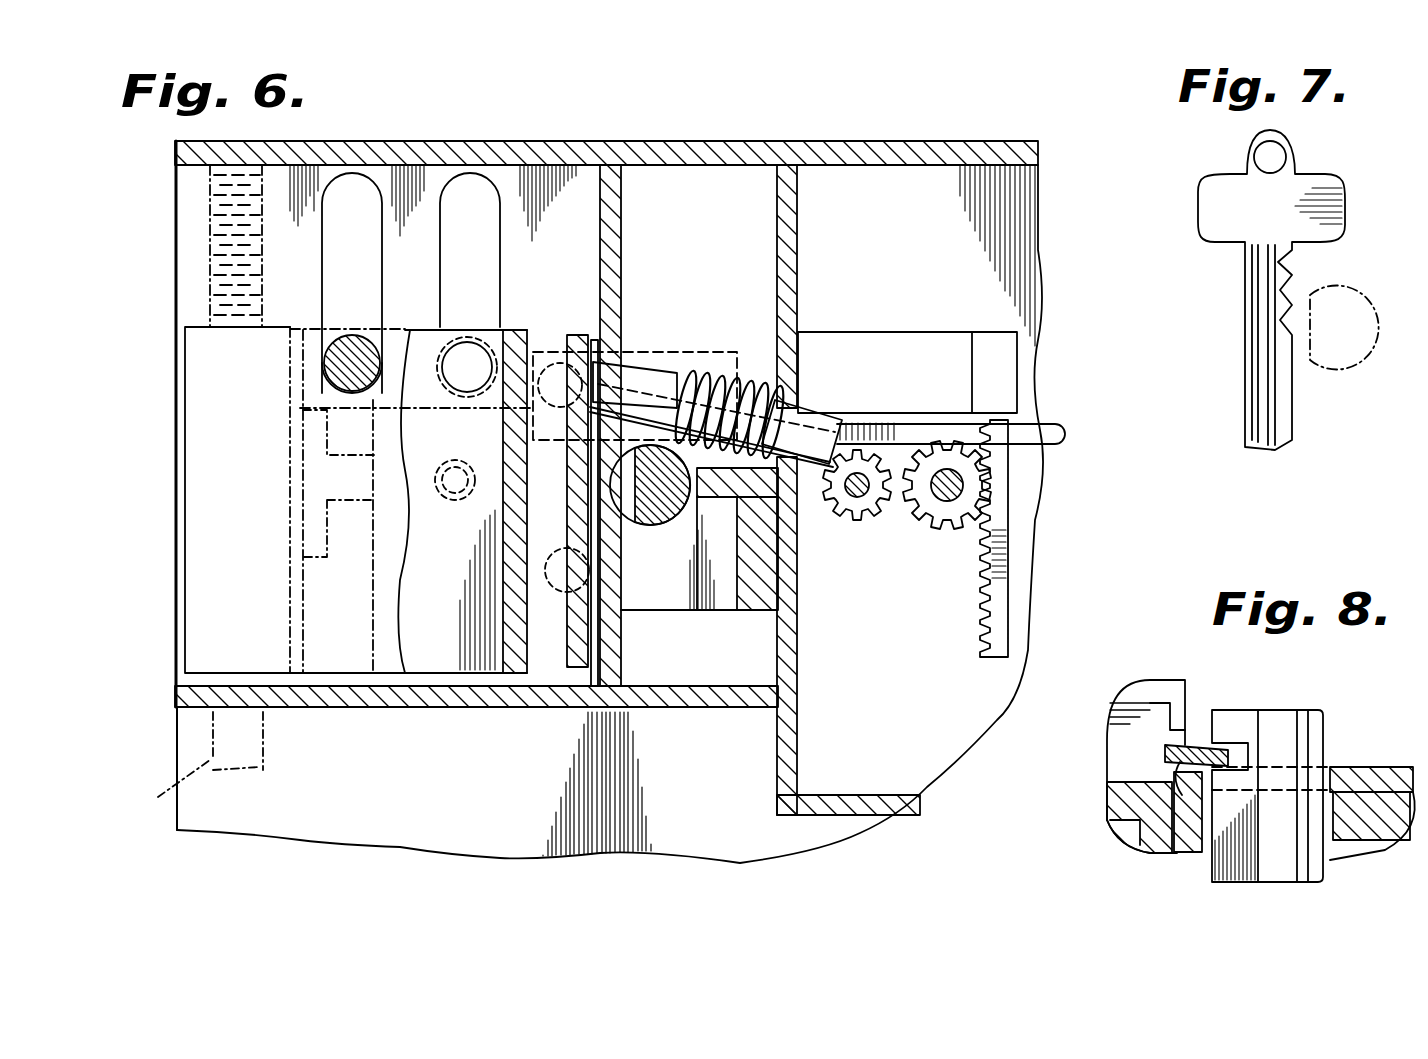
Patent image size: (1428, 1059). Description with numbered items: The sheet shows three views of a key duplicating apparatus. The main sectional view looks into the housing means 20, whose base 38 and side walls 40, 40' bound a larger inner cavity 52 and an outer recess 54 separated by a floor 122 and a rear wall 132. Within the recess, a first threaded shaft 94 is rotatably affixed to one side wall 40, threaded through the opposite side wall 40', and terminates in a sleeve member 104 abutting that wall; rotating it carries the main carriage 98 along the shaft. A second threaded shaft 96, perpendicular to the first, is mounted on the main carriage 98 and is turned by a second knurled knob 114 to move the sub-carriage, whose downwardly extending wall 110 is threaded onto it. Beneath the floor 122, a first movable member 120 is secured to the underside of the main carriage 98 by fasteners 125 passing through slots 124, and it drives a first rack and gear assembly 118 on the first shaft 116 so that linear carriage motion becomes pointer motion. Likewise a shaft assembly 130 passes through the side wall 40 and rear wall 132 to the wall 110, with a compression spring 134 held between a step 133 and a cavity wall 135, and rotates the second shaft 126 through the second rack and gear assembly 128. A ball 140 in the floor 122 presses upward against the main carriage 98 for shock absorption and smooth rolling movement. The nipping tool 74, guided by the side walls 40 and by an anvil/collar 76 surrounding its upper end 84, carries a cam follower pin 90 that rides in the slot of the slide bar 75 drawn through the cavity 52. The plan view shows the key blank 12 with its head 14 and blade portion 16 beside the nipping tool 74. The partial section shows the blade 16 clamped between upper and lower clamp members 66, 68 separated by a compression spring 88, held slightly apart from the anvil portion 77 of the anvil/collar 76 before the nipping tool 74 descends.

In FIG. 7, the key blank 12 is at (1352, 170).
In FIG. 7, the head 14 is at (1230, 196).
In FIG. 7, the blade portion 16 is at (1290, 412).
In FIG. 8, the blade portion 16 is at (1200, 745).
In FIG. 6, the housing means 20 is at (900, 135).
In FIG. 6, the base 38 is at (395, 823).
In FIG. 6, the side walls 40 is at (606, 448).
In FIG. 6, the side wall 40' is at (601, 801).
In FIG. 6, the larger inner cavity 52 is at (908, 758).
In FIG. 6, the outer recess 54 is at (278, 272).
In FIG. 8, the upper clamp member 66 is at (1168, 683).
In FIG. 8, the lower clamp member 68 is at (1117, 768).
In FIG. 6, the nipping tool 74 is at (680, 510).
In FIG. 7, the nipping tool 74 is at (1348, 312).
In FIG. 8, the nipping tool 74 is at (1325, 873).
In FIG. 6, the slide bar 75 is at (1063, 447).
In FIG. 8, the anvil/collar 76 is at (1370, 775).
In FIG. 8, the anvil portion 77 is at (1178, 770).
In FIG. 8, the upper end 84 is at (1302, 715).
In FIG. 8, the compression spring 88 is at (1143, 700).
In FIG. 6, the cam follower pin 90 is at (647, 520).
In FIG. 6, the first threaded shaft 94 is at (210, 207).
In FIG. 6, the second threaded shaft 96 is at (352, 490).
In FIG. 6, the main carriage 98 is at (195, 548).
In FIG. 6, the sleeve member 104 is at (185, 765).
In FIG. 6, the downwardly extending wall 110 is at (575, 662).
In FIG. 8, the downwardly extending wall 110 is at (1160, 850).
In FIG. 6, the second knurled knob 114 is at (300, 432).
In FIG. 6, the first shaft 116 is at (920, 513).
In FIG. 6, the first rack and gear assembly 118 is at (968, 533).
In FIG. 6, the first movable member 120 is at (340, 333).
In FIG. 6, the floor 122 is at (560, 190).
In FIG. 6, the slots 124 is at (455, 192).
In FIG. 6, the fasteners 125 is at (455, 365).
In FIG. 6, the second shaft 126 is at (863, 420).
In FIG. 6, the second rack and gear assembly 128 is at (888, 420).
In FIG. 6, the shaft assembly 130 is at (752, 370).
In FIG. 6, the rear wall 132 is at (623, 655).
In FIG. 8, the rear wall 132 is at (1195, 835).
In FIG. 6, the step 133 is at (662, 345).
In FIG. 6, the compression spring 134 is at (697, 373).
In FIG. 6, the cavity wall 135 is at (790, 648).
In FIG. 6, the ball 140 is at (460, 495).